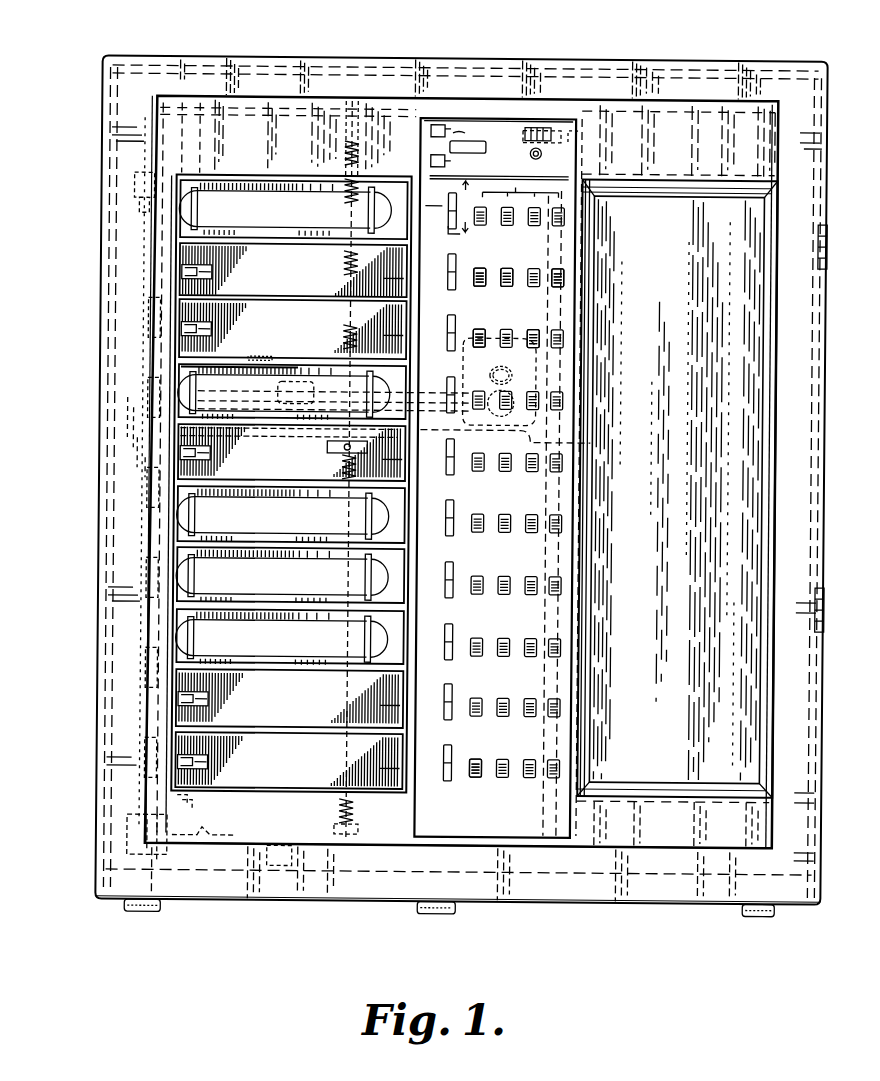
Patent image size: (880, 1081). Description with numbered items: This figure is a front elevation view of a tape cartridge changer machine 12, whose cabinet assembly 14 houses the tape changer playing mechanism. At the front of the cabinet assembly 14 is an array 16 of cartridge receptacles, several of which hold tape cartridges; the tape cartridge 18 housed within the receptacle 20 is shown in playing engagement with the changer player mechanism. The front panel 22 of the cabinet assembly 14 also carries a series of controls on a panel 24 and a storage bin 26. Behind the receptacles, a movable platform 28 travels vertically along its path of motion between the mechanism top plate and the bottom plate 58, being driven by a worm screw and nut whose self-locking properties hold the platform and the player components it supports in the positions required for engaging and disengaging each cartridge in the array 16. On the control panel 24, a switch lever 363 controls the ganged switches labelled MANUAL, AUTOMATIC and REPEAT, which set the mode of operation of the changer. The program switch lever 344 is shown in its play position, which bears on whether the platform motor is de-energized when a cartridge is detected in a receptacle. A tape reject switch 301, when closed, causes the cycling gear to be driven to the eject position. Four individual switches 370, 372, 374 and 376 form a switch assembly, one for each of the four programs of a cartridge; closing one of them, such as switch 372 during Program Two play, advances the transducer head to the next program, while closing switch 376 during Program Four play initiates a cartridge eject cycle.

The tape cartridge changer machine 12 is at (471, 47).
The cabinet assembly 14 is at (100, 542).
The array of cartridge receptacles 16 is at (183, 251).
The tape cartridge 18 is at (193, 386).
The receptacle 20 is at (224, 368).
The front panel 22 is at (492, 903).
The control panel 24 is at (510, 822).
The storage bin 26 is at (701, 478).
The movable platform 28 is at (517, 442).
The bottom plate 58 is at (262, 813).
The tape reject switch 301 is at (536, 158).
The program switch lever 344 is at (478, 288).
The switch lever 363 is at (535, 128).
The switch 370 is at (478, 329).
The switch 372 is at (506, 276).
The switch 374 is at (532, 329).
The switch 376 is at (558, 285).